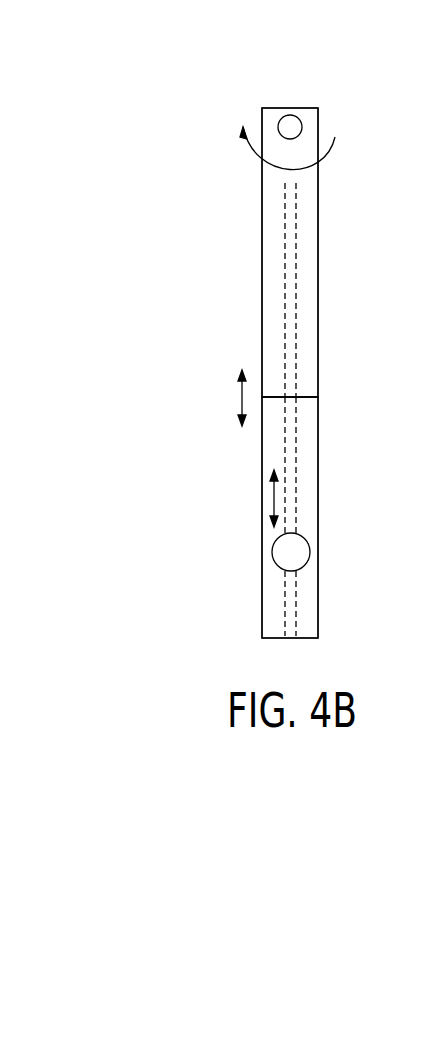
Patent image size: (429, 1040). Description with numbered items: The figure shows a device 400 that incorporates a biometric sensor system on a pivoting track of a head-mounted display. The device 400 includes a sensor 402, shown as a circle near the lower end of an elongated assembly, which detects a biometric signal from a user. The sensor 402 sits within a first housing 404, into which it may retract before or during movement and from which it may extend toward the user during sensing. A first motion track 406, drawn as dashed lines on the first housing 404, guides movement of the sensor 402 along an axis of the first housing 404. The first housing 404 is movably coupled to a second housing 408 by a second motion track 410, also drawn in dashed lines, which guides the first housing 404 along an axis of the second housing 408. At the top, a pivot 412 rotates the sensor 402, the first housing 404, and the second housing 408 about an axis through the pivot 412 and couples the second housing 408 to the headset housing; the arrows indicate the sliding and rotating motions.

The device 400 is at (196, 214).
The sensor 402 is at (279, 569).
The first housing 404 is at (262, 532).
The first motion track 406 is at (297, 605).
The second housing 408 is at (262, 298).
The second motion track 410 is at (296, 308).
The pivot 412 is at (291, 127).